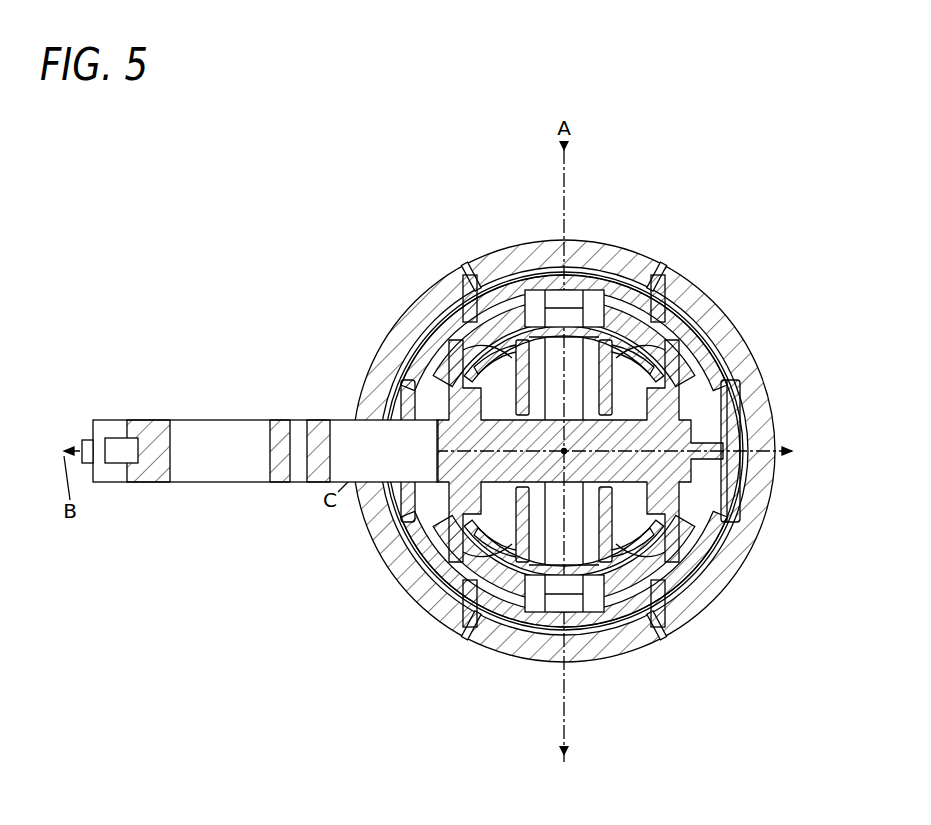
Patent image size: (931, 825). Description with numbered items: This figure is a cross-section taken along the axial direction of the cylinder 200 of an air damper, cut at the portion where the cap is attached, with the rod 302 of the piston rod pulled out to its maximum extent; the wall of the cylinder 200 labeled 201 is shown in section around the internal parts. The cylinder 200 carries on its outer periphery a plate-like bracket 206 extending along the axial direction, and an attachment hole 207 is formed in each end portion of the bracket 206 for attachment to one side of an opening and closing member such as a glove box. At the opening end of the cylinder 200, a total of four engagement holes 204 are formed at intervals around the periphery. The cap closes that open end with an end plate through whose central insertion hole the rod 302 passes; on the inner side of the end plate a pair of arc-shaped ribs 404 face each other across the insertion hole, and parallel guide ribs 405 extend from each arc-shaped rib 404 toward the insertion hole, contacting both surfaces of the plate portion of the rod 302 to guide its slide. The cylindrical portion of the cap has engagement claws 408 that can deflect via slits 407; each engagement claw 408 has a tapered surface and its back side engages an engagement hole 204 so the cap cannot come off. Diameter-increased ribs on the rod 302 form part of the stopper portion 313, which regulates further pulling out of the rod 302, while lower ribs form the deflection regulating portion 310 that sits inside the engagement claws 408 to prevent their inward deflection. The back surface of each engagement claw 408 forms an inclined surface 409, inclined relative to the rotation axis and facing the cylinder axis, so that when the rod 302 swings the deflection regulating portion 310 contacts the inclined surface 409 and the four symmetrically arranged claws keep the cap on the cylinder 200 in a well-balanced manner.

The cylinder 200 is at (578, 236).
The housing 201 is at (512, 262).
The engagement hole 204 is at (503, 298).
The bracket 206 is at (278, 420).
The attachment hole 207 is at (205, 432).
The rod 302 is at (690, 412).
The deflection regulating portion 310 is at (735, 380).
The stopper portion 313 is at (400, 420).
The arc-shaped rib 404 is at (531, 290).
The guide rib 405 is at (470, 312).
The slit 407 is at (664, 298).
The engagement claw 408 is at (692, 300).
The inclined surface 409 is at (738, 360).